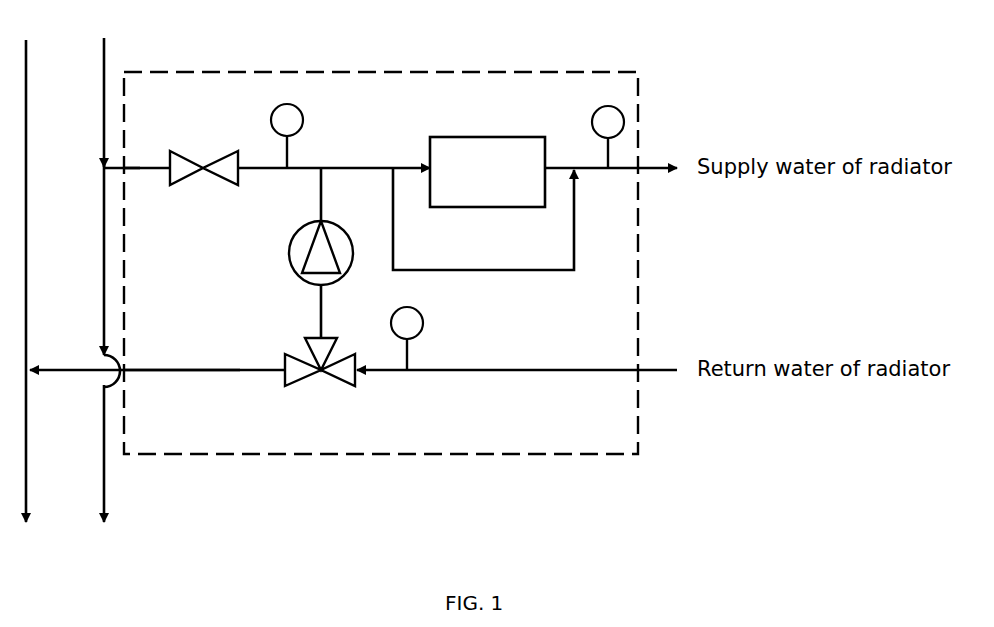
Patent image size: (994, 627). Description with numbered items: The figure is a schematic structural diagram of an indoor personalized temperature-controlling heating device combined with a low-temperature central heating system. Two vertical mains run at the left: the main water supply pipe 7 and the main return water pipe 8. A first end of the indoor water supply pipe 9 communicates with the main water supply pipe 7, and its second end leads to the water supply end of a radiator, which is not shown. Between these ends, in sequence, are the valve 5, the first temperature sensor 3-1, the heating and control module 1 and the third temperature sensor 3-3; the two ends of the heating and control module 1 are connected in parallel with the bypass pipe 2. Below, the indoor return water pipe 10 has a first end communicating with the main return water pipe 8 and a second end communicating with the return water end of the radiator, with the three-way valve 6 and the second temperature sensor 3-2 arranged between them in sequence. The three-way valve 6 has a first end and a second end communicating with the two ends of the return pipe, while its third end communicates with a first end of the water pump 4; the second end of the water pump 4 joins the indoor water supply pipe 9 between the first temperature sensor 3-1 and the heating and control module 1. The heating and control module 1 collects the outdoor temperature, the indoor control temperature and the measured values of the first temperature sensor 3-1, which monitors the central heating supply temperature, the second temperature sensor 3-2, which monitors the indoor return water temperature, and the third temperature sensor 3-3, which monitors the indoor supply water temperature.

The heating and control module 1 is at (466, 131).
The bypass pipe 2 is at (577, 232).
The first temperature sensor 3-1 is at (287, 125).
The second temperature sensor 3-2 is at (425, 338).
The third temperature sensor 3-3 is at (608, 125).
The water pump 4 is at (296, 236).
The valve 5 is at (203, 170).
The three-way valve 6 is at (319, 373).
The main water supply pipe 7 is at (110, 66).
The main return water pipe 8 is at (30, 74).
The indoor water supply pipe 9 is at (130, 165).
The indoor return water pipe 10 is at (205, 368).